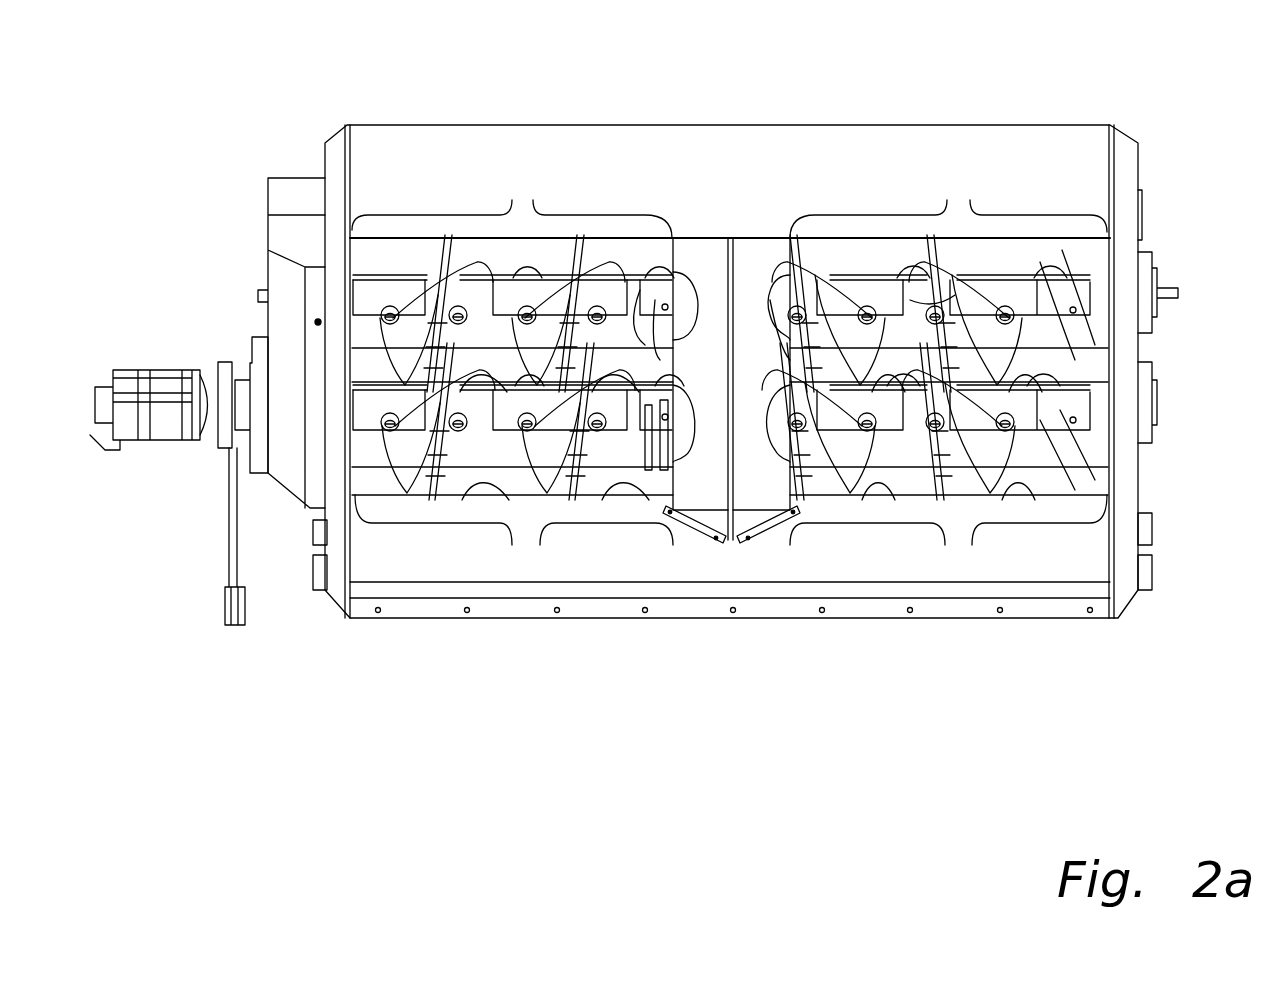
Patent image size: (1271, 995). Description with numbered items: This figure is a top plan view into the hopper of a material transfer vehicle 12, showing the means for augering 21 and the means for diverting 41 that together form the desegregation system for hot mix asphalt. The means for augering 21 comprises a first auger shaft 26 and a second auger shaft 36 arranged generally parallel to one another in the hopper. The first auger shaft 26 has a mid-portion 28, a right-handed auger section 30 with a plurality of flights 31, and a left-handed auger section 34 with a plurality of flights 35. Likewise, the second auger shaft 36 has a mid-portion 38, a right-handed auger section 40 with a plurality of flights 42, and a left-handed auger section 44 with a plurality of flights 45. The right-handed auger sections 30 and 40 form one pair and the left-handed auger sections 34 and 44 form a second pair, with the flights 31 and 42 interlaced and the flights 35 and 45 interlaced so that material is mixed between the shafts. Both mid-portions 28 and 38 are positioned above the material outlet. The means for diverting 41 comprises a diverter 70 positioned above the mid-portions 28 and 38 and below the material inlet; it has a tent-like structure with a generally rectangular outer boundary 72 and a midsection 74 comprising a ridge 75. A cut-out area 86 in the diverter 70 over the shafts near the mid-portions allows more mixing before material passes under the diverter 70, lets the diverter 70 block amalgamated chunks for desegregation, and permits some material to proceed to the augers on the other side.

The material transfer vehicle 12 is at (1070, 448).
The means for augering 21 is at (855, 250).
The auger shaft 26 is at (858, 293).
The mid-portion 28 is at (670, 297).
The right-handed auger section 30 is at (937, 237).
The flights 31 is at (947, 200).
The left-handed auger section 34 is at (512, 195).
The flights 35 is at (413, 350).
The second auger shaft 36 is at (500, 417).
The mid-portion 38 is at (643, 407).
The right-handed auger section 40 is at (932, 500).
The means for diverting 41 is at (790, 243).
The flights 42 is at (987, 470).
The left-handed auger section 44 is at (550, 467).
The flights 45 is at (598, 440).
The diverter 70 is at (748, 497).
The outer boundary 72 is at (797, 490).
The midsection 74 is at (723, 348).
The ridge 75 is at (757, 265).
The cut-out area 86 is at (690, 420).